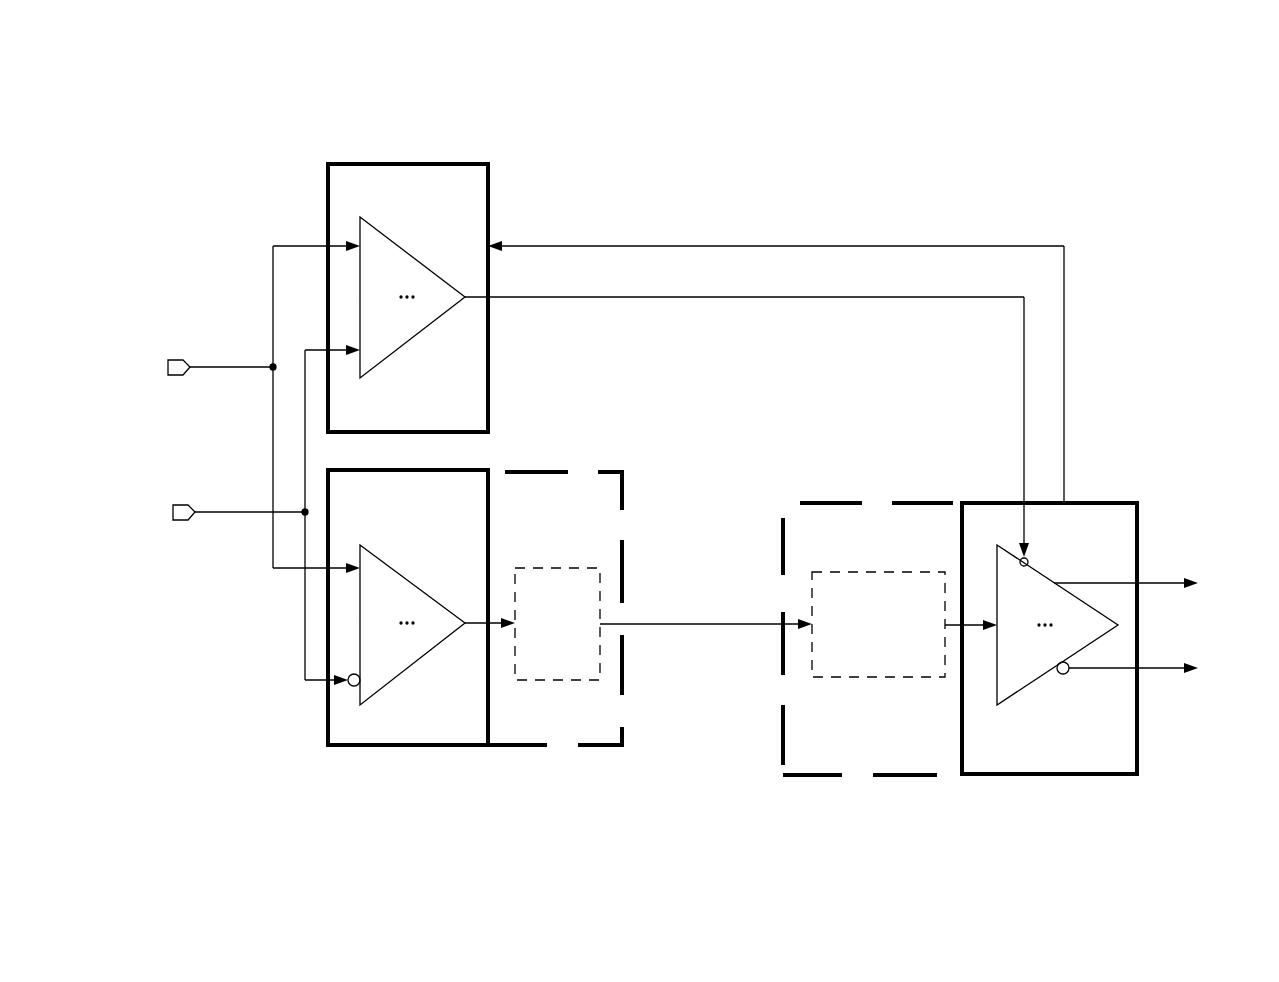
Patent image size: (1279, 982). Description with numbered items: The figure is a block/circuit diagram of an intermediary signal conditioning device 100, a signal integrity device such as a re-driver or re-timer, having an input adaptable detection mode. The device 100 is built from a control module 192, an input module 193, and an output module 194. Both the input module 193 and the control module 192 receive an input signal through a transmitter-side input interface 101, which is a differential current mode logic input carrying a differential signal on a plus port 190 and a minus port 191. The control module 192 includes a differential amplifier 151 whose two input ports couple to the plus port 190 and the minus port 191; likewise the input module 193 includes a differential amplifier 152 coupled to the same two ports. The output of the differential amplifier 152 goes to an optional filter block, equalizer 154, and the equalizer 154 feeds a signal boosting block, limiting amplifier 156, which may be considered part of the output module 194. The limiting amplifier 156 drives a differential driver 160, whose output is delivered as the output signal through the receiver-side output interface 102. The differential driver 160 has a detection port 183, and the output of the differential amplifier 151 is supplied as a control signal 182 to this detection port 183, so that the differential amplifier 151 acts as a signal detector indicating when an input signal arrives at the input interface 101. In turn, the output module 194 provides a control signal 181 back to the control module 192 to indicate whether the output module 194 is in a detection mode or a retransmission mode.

The intermediary signal conditioning device 100 is at (1130, 70).
The input interface 101 is at (142, 443).
The output interface 102 is at (1200, 573).
The differential amplifier 151 is at (393, 237).
The differential amplifier 152 is at (373, 553).
The equalizer 154 is at (602, 655).
The limiting amplifier 156 is at (810, 598).
The differential driver 160 is at (1030, 683).
The control signal 181 is at (660, 246).
The control signal 182 is at (745, 297).
The detection port 183 is at (1030, 560).
The plus port 190 is at (165, 360).
The minus port 191 is at (170, 520).
The control module 192 is at (373, 164).
The input module 193 is at (355, 748).
The output module 194 is at (1095, 776).